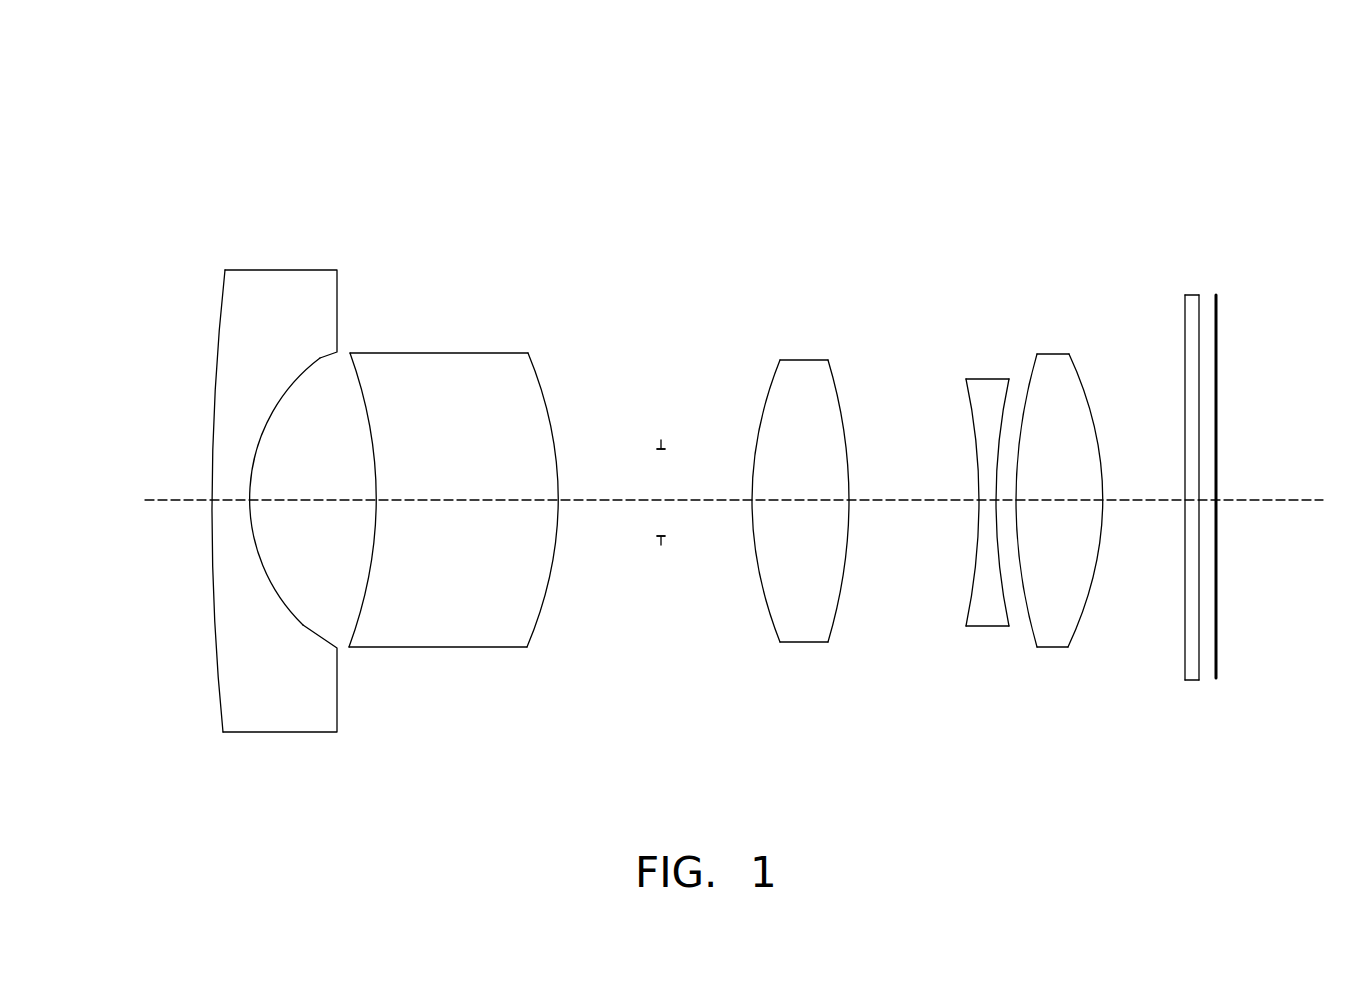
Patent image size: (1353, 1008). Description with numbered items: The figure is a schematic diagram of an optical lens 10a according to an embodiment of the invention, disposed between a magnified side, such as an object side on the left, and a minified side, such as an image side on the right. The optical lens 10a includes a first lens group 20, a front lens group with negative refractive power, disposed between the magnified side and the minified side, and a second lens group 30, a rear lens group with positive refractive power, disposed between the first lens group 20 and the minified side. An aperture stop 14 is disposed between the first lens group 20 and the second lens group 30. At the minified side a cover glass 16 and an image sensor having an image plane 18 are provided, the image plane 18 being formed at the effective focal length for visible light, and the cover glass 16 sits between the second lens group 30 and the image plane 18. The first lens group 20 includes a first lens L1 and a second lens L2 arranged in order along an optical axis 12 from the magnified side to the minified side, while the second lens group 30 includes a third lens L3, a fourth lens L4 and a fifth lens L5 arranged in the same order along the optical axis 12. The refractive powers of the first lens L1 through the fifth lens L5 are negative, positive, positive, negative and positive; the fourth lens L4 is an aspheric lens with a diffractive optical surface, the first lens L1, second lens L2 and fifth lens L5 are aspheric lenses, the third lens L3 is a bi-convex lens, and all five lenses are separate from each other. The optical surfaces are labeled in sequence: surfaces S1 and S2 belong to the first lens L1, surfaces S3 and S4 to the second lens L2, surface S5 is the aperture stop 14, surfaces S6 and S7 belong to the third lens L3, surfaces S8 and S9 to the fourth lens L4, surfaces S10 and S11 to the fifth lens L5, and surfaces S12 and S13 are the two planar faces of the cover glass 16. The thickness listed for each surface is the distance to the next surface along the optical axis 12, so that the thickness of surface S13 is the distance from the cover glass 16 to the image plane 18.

The optical lens 10a is at (212, 92).
The optical axis 12 is at (1283, 497).
The aperture stop 14 is at (661, 440).
The cover glass 16 is at (1193, 295).
The image plane 18 is at (1216, 295).
The first lens group 20 is at (535, 172).
The second lens group 30 is at (1115, 173).
The first lens L1 is at (277, 282).
The second lens L2 is at (430, 365).
The third lens L3 is at (797, 370).
The fourth lens L4 is at (988, 380).
The fifth lens L5 is at (1050, 363).
The surface S1 is at (220, 688).
The surface S2 is at (322, 628).
The surface S3 is at (367, 603).
The surface S4 is at (553, 582).
The surface S5 is at (661, 545).
The surface S6 is at (763, 597).
The surface S7 is at (842, 597).
The surface S8 is at (975, 580).
The surface S9 is at (1002, 590).
The surface S10 is at (1030, 617).
The surface S11 is at (1087, 607).
The surface S12 is at (1183, 563).
The surface S13 is at (1198, 603).